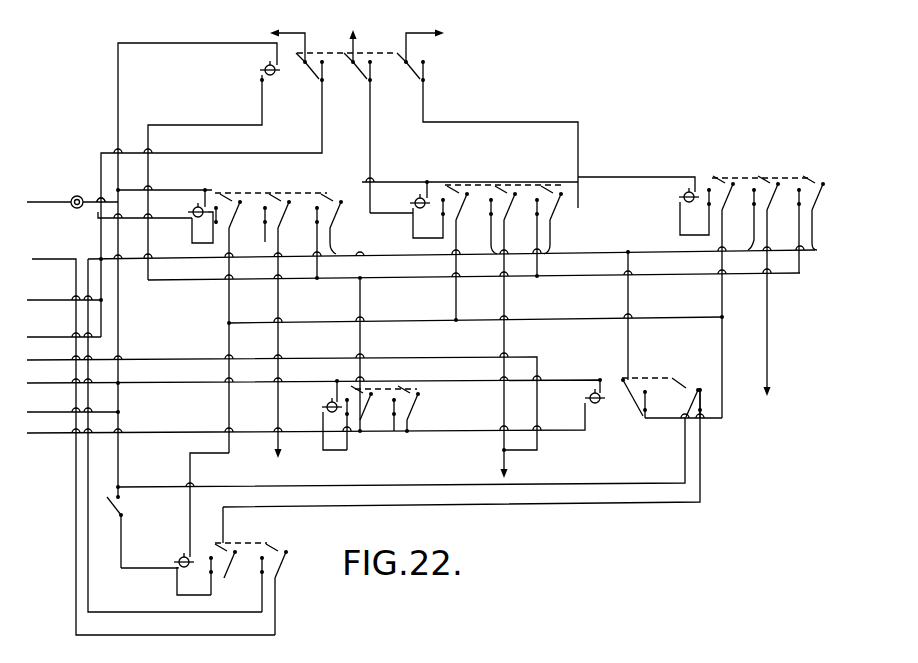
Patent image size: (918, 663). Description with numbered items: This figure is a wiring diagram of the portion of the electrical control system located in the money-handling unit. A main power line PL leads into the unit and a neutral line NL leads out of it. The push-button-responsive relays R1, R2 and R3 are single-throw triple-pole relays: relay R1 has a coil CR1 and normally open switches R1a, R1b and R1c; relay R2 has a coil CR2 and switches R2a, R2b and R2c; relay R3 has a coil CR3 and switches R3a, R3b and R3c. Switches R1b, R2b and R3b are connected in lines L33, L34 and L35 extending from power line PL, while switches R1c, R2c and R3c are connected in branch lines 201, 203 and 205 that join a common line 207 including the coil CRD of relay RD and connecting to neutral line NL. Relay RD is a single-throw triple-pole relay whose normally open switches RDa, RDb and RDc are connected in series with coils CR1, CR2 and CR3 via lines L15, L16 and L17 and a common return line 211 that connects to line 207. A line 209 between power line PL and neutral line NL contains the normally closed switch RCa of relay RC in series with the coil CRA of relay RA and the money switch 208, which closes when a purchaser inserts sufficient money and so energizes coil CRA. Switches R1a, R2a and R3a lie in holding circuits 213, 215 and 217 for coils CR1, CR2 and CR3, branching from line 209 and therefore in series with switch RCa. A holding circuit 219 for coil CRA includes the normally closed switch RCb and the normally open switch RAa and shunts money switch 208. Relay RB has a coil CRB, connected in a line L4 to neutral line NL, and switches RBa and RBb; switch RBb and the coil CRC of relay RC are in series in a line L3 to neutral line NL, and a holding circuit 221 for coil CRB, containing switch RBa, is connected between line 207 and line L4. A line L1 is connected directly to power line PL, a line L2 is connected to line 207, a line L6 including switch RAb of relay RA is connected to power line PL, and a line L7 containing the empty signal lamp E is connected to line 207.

The branch line 201 is at (325, 256).
The branch line 203 is at (538, 258).
The branch line 205 is at (815, 250).
The common line 207 is at (199, 43).
The money switch 208 is at (123, 509).
The line 209 is at (391, 322).
The common return line 211 is at (408, 183).
The holding circuit 213 is at (192, 240).
The holding circuit 215 is at (413, 237).
The holding circuit 217 is at (680, 235).
The holding circuit 219 is at (512, 488).
The holding circuit 221 is at (363, 306).
The coil CRD is at (260, 69).
The coil CR1 is at (190, 211).
The coil CR2 is at (410, 203).
The coil CR3 is at (679, 196).
The coil CRA is at (175, 558).
The coil CRB is at (324, 406).
The coil CRC is at (585, 400).
The relay RD is at (332, 46).
The normally open switch RDa is at (301, 82).
The normally open switch RDb is at (350, 80).
The normally open switch RDc is at (401, 82).
The push-button-responsive relay R1 is at (258, 186).
The normally open switch R1a is at (225, 312).
The normally open switch R1b is at (285, 207).
The normally open switch R1c is at (336, 224).
The push-button-responsive relay R2 is at (487, 179).
The normally open switch R2a is at (451, 187).
The normally open switch R2b is at (506, 205).
The normally open switch R2c is at (562, 183).
The push-button-responsive relay R3 is at (755, 172).
The normally open switch R3a is at (719, 181).
The normally open switch R3b is at (772, 201).
The normally open switch R3c is at (811, 176).
The relay RA is at (228, 543).
The normally open switch RAa is at (230, 572).
The normally open switch RAb is at (290, 589).
The relay RB is at (410, 392).
The normally open switch RBa is at (370, 422).
The normally open switch RBb is at (418, 412).
The relay RC is at (658, 372).
The normally closed switch RCa is at (671, 414).
The normally closed switch RCb is at (697, 386).
The empty signal lamp E is at (77, 195).
The line L7 is at (56, 202).
The line L6 is at (57, 258).
The line L1 is at (55, 299).
The main power line PL is at (58, 335).
The line L4 is at (556, 361).
The neutral line NL is at (314, 379).
The line L2 is at (58, 413).
The line L3 is at (43, 434).
The line L15 is at (304, 32).
The line L16 is at (358, 38).
The line L17 is at (409, 50).
The line L33 is at (266, 241).
The line L34 is at (500, 267).
The line L35 is at (766, 266).